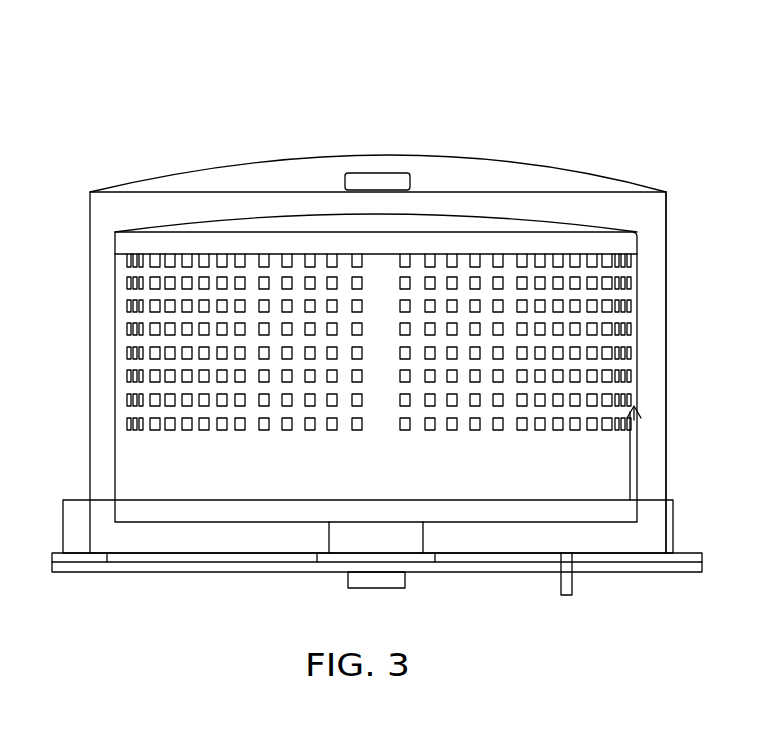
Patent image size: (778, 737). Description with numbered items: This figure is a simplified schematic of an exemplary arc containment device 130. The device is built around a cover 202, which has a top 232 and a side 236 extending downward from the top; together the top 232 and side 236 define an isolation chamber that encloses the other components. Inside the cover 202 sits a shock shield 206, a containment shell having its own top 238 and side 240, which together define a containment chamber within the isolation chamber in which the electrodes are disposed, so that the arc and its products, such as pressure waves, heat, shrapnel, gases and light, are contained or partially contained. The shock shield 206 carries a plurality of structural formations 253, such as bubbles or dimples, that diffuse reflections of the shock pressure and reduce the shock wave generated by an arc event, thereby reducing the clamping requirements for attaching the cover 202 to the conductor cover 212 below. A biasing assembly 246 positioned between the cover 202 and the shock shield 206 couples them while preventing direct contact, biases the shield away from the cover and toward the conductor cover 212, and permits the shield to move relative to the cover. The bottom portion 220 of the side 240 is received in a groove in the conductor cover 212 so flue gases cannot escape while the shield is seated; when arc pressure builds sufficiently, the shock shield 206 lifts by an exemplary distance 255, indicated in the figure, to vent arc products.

The arc containment device 130 is at (158, 70).
The cover 202 is at (262, 161).
The shock shield 206 is at (230, 216).
The conductor cover 212 is at (58, 562).
The bottom portion 220 is at (112, 514).
The top 232 is at (504, 158).
The side 236 is at (667, 366).
The top 238 is at (553, 217).
The side 240 is at (636, 318).
The biasing assembly 246 is at (402, 180).
The structural formations 253 is at (636, 272).
The distance 255 is at (634, 500).